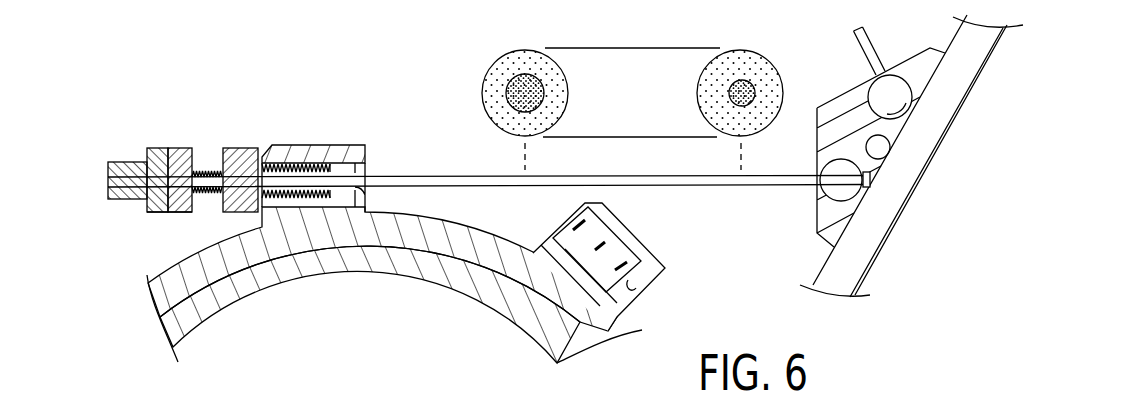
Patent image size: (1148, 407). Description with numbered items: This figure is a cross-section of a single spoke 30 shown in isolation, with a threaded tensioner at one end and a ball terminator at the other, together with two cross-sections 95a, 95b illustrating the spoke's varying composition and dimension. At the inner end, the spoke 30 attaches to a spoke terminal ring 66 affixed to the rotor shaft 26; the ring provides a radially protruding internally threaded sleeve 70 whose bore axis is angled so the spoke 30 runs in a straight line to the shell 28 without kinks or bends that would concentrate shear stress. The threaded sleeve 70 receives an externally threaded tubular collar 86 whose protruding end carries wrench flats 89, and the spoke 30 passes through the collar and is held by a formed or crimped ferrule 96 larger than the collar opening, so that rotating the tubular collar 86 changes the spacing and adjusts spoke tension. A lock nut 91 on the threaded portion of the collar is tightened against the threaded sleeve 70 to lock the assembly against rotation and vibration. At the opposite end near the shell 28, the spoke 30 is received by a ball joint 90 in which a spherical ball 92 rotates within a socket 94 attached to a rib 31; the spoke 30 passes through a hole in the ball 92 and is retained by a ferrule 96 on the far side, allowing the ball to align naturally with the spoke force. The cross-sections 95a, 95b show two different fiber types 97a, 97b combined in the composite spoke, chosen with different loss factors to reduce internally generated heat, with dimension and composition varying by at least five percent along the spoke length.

The rotor shaft 26 is at (233, 293).
The shell 28 is at (952, 123).
The spoke 30 is at (700, 184).
The rib 31 is at (885, 152).
The spoke terminal ring 66 is at (303, 240).
The threaded sleeve 70 is at (295, 145).
The tubular collar 86 is at (180, 148).
The wrench flats 89 is at (158, 212).
The ball joint 90 is at (128, 162).
The lock nut 91 is at (238, 148).
The spherical ball 92 is at (842, 163).
The socket 94 is at (843, 202).
The cross-section 95a is at (504, 40).
The cross-section 95b is at (719, 40).
The ferrule 96 is at (870, 187).
The fiber type 97a is at (518, 83).
The fiber type 97b is at (497, 107).